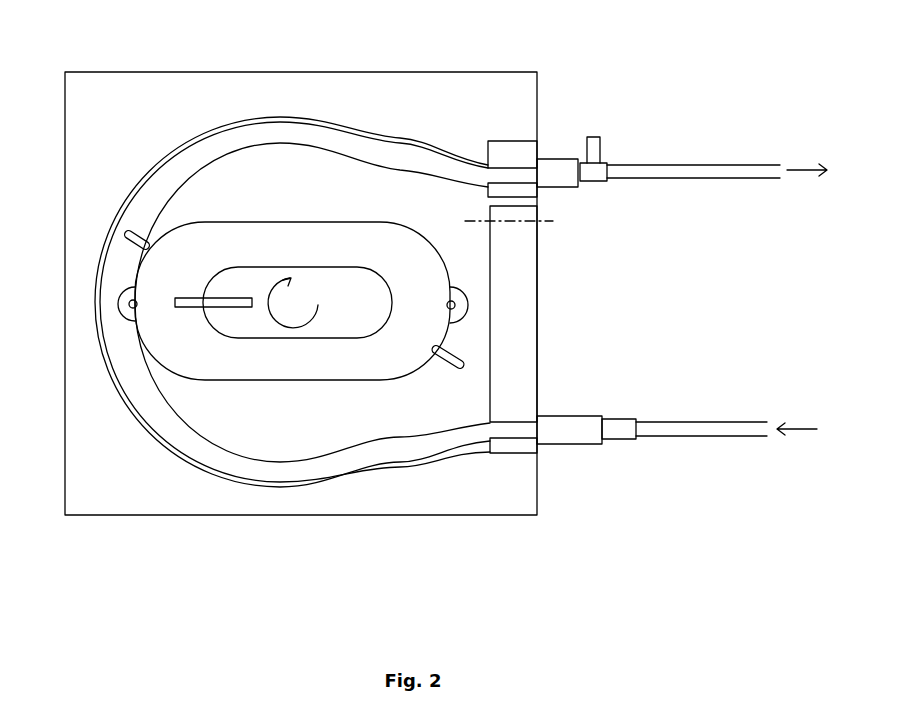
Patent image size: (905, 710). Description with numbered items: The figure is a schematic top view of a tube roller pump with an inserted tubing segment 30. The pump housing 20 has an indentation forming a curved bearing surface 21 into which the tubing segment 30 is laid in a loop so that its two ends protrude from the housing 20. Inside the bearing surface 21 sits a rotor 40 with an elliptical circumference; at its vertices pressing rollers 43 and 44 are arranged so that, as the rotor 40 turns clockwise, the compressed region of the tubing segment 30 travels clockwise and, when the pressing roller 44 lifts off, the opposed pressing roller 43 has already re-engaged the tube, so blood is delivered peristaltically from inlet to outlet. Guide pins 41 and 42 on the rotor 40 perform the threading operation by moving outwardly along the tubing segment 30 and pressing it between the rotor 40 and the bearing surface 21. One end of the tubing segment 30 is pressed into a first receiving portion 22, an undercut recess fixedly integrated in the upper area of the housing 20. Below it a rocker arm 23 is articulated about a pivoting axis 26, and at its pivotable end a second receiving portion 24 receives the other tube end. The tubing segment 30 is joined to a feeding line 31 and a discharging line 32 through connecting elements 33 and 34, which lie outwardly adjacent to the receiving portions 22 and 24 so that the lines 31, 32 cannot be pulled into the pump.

The pump housing 20 is at (375, 82).
The bearing surface 21 is at (138, 430).
The first receiving portion 22 is at (517, 146).
The rocker arm 23 is at (527, 333).
The second receiving portion 24 is at (510, 446).
The pivoting axis 26 is at (468, 219).
The tubing segment 30 is at (157, 167).
The feeding line 31 is at (733, 432).
The discharging line 32 is at (718, 170).
The connecting element 33 is at (587, 425).
The connecting element 34 is at (596, 182).
The rotor 40 is at (283, 368).
The guide pin 41 is at (148, 246).
The guide pin 42 is at (440, 367).
The pressing roller 43 is at (456, 290).
The pressing roller 44 is at (120, 303).